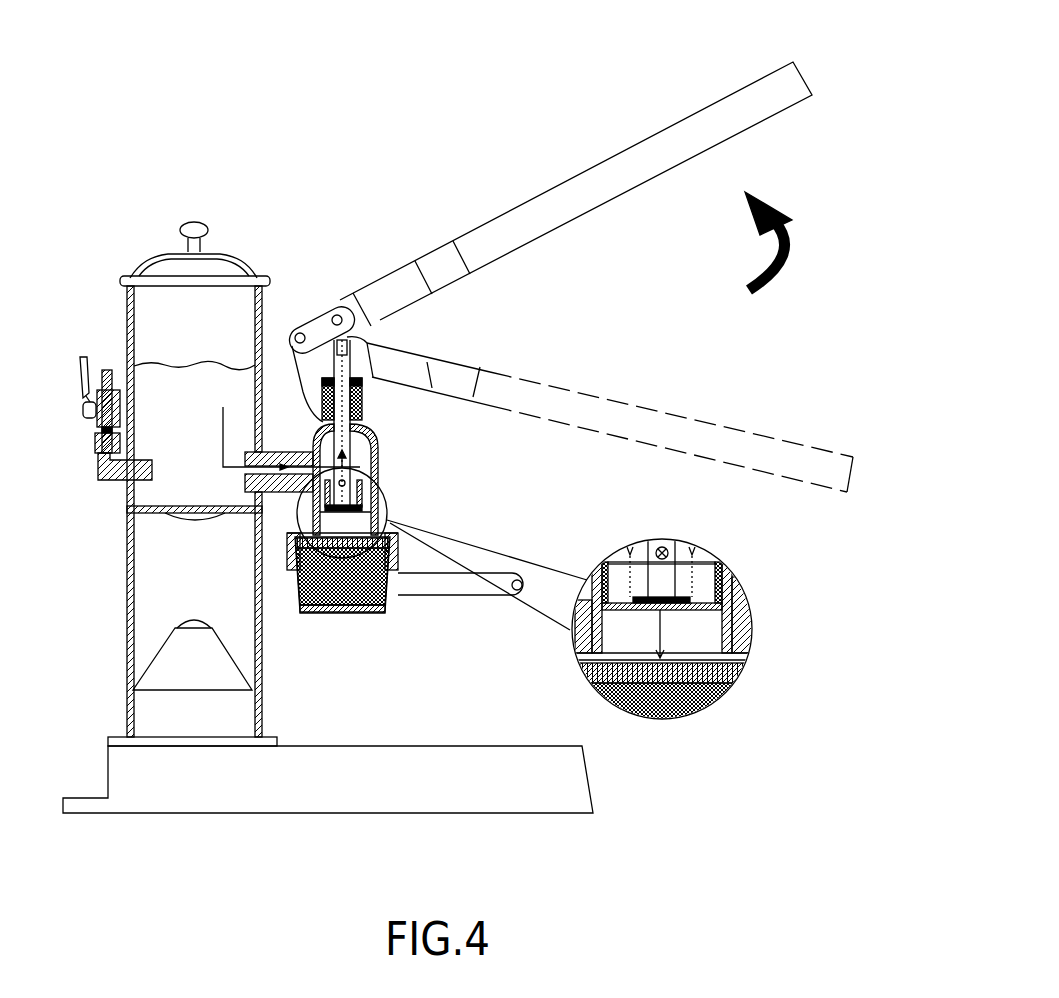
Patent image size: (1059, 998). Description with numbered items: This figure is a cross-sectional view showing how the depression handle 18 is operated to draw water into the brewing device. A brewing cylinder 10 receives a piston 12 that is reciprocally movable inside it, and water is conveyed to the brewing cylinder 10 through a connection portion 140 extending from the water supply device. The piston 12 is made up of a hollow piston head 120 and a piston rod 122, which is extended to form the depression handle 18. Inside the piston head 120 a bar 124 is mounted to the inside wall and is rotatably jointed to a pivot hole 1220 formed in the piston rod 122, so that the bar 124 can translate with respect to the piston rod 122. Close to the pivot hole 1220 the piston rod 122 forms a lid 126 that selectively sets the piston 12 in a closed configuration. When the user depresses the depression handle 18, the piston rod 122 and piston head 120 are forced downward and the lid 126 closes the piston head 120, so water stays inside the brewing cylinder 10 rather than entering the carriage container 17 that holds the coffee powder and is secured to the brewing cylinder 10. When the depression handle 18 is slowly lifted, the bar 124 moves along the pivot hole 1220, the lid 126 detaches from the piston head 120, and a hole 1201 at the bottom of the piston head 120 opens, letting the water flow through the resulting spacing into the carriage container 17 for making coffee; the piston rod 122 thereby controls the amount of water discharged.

The brewing cylinder 10 is at (373, 433).
The piston 12 is at (560, 458).
The carriage container 17 is at (365, 612).
The depression handle 18 is at (632, 167).
The piston head 120 is at (585, 584).
The piston rod 122 is at (343, 388).
The bar 124 is at (665, 562).
The lid 126 is at (668, 600).
The connection portion 140 is at (280, 447).
The hole 1201 is at (650, 608).
The pivot hole 1220 is at (664, 548).